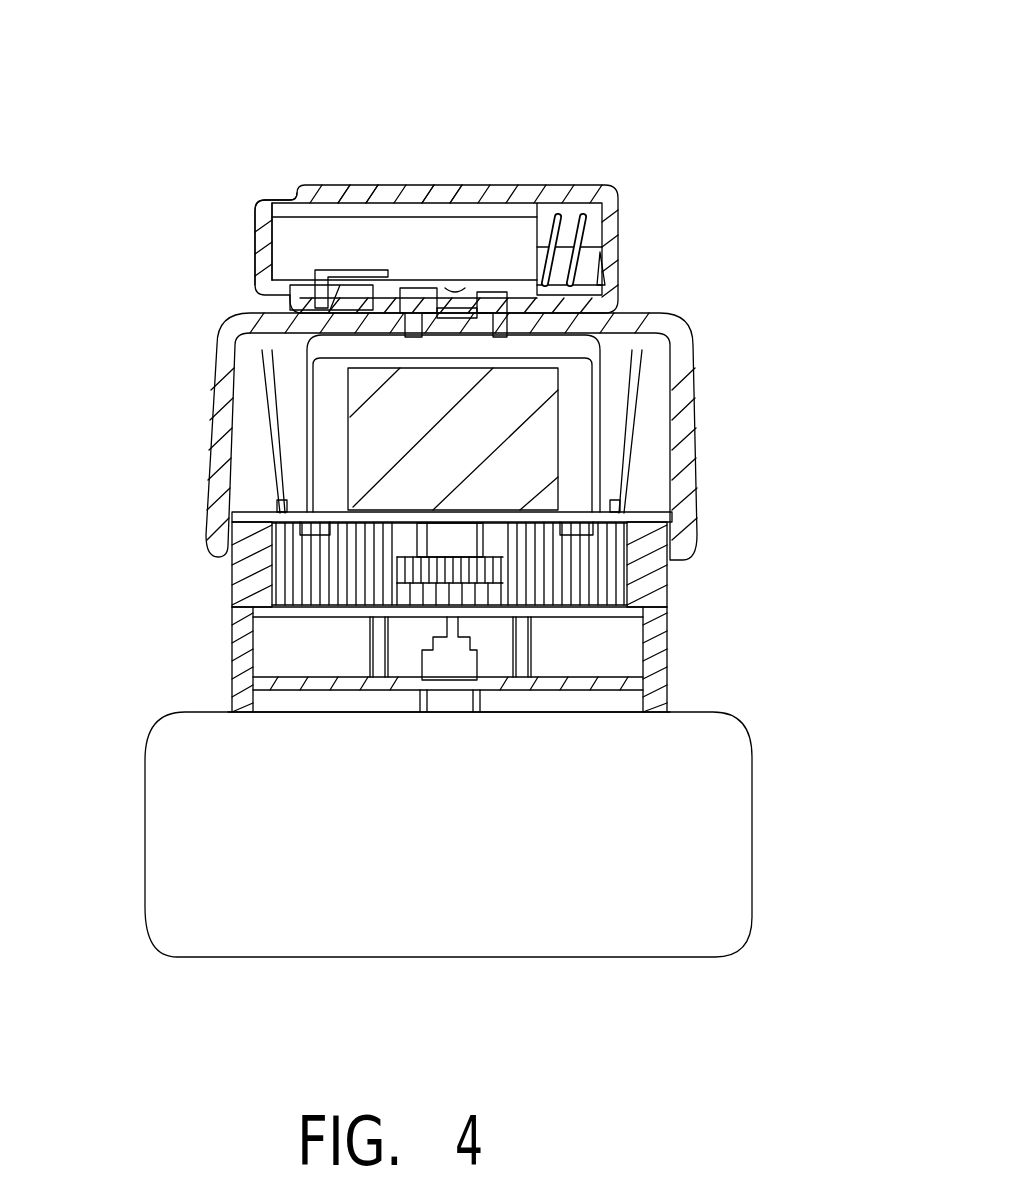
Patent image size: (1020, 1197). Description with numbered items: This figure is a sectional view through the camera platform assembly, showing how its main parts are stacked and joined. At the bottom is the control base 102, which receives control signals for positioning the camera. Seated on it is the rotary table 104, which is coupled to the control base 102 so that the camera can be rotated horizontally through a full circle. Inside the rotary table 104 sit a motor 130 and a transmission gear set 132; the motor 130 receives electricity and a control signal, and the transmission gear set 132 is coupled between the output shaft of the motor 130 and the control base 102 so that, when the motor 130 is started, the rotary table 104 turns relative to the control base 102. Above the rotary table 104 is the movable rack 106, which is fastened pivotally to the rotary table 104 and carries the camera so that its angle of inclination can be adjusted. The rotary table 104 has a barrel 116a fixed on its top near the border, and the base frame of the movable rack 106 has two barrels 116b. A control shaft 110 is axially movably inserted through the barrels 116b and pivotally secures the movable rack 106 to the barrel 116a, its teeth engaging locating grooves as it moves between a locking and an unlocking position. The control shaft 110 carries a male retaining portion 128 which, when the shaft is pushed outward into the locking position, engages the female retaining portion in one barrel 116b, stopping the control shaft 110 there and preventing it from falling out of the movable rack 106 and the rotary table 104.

The control base 102 is at (203, 715).
The rotary table 104 is at (697, 503).
The movable rack 106 is at (618, 232).
The control shaft 110 is at (280, 200).
The barrel 116a is at (437, 186).
The barrels 116b is at (347, 186).
The male retaining portion 128 is at (322, 303).
The motor 130 is at (520, 405).
The transmission gear set 132 is at (533, 578).